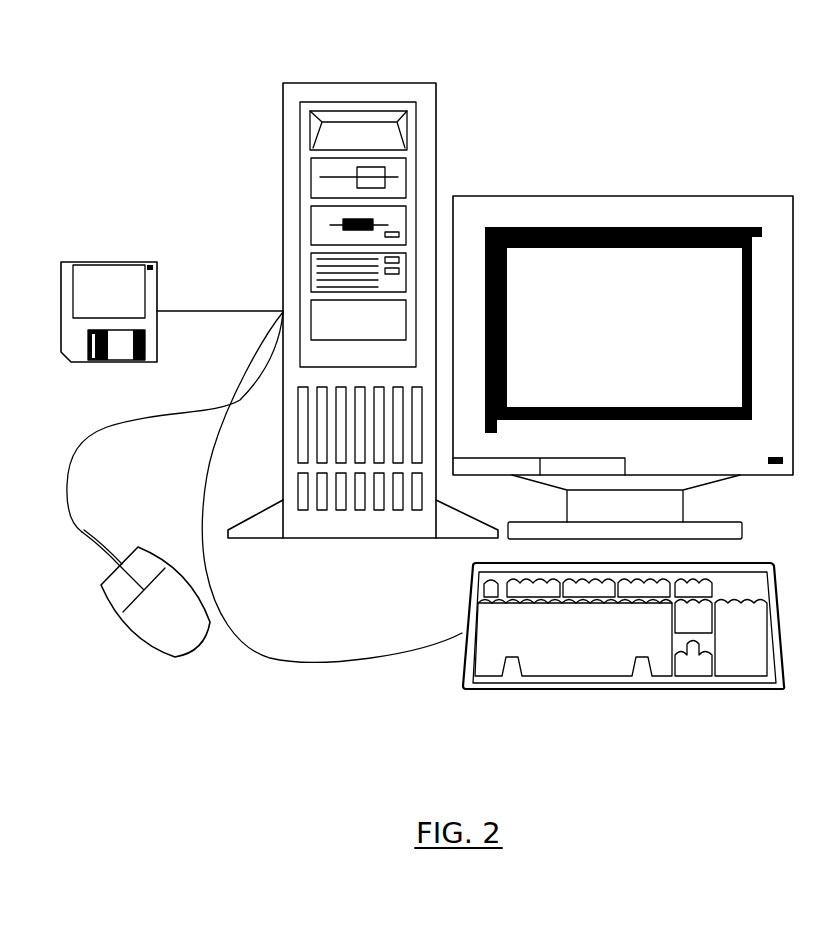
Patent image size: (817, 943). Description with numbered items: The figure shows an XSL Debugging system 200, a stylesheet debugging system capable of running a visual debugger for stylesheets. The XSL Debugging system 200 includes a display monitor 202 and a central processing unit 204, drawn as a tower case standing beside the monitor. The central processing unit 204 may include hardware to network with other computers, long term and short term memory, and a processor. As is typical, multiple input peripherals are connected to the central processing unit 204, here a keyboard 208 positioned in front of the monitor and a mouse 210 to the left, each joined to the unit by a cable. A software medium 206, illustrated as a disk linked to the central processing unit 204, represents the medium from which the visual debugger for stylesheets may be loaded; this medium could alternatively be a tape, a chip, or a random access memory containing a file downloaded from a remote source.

The XSL Debugging system 200 is at (162, 72).
The display monitor 202 is at (622, 196).
The central processing unit 204 is at (340, 83).
The software medium 206 is at (130, 303).
The keyboard 208 is at (623, 692).
The mouse 210 is at (122, 610).